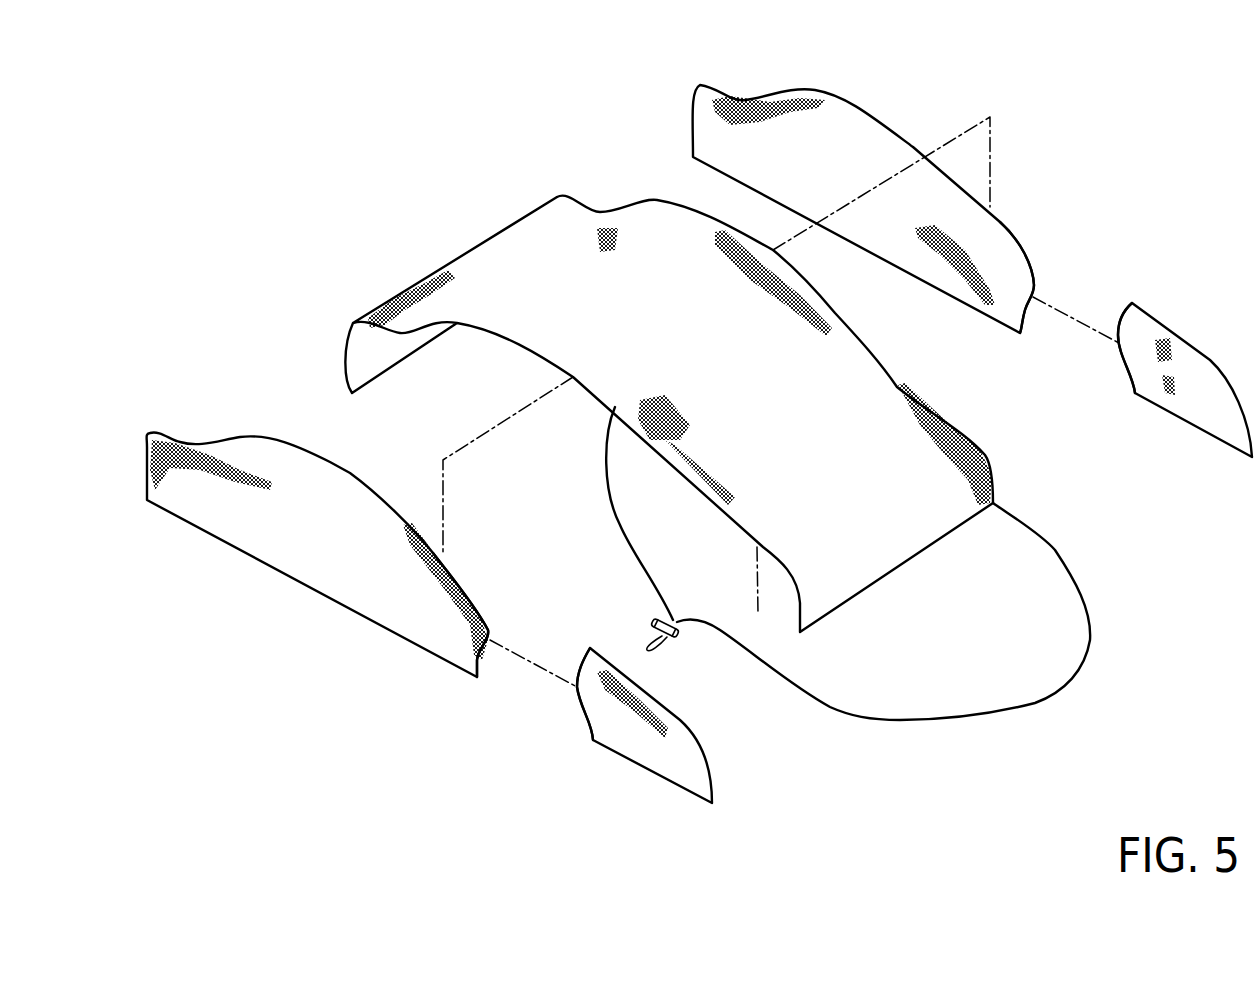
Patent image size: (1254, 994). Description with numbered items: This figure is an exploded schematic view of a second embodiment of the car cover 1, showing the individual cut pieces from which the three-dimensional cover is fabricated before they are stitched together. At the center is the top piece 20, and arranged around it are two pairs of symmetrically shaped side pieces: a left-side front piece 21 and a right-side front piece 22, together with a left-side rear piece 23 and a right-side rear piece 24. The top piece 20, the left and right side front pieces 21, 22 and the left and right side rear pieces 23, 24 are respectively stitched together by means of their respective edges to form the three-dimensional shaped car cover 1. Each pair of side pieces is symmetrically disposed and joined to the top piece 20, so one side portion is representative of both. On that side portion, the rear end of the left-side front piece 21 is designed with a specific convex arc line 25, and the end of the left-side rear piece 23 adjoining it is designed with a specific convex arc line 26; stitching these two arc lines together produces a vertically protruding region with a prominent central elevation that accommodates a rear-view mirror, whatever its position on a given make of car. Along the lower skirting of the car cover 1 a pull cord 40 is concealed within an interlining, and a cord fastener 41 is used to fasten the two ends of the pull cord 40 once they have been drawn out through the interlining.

The car cover 1 is at (458, 229).
The top piece 20 is at (645, 220).
The left-side front piece 21 is at (653, 755).
The right-side front piece 22 is at (1211, 413).
The left-side rear piece 23 is at (313, 558).
The right-side rear piece 24 is at (893, 153).
The convex arc line 25 is at (1118, 323).
The convex arc line 26 is at (1034, 287).
The pull cord 40 is at (983, 717).
The cord fastener 41 is at (670, 637).